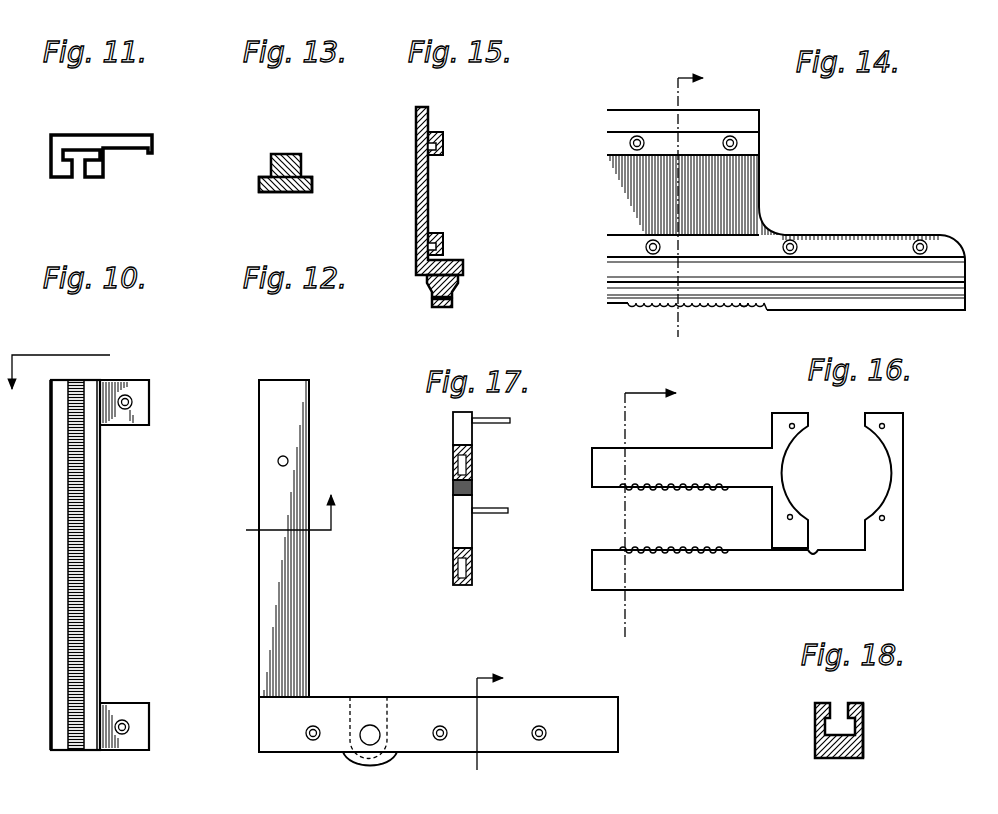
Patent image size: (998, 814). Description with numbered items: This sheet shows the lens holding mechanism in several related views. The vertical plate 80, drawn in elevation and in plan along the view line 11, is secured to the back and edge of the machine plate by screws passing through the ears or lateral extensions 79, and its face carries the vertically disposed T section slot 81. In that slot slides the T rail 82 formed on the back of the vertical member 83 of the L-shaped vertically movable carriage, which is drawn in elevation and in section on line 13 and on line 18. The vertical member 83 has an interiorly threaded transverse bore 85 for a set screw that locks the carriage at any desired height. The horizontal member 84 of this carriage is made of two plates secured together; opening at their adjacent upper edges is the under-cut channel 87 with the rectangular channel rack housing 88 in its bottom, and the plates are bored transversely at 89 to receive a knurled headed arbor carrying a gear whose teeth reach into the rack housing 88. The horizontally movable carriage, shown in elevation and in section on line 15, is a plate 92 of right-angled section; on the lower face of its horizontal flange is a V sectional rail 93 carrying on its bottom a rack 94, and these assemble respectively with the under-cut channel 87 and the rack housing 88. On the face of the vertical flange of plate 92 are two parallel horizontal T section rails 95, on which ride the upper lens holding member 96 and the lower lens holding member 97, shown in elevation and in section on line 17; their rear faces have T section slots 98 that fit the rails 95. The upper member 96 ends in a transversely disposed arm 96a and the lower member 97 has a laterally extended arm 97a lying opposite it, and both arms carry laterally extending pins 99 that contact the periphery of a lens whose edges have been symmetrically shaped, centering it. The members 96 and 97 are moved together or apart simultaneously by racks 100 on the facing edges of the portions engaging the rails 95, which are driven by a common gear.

In FIG. 11, the ears or lateral extensions 79 is at (148, 153).
In FIG. 10, the ears or lateral extensions 79 is at (145, 427).
In FIG. 11, the vertical plate 80 is at (91, 135).
In FIG. 10, the vertical plate 80 is at (102, 631).
In FIG. 11, the T section slot 81 is at (78, 163).
In FIG. 10, the T section slot 81 is at (78, 384).
In FIG. 13, the T rail 82 is at (288, 154).
In FIG. 13, the vertical member 83 is at (279, 192).
In FIG. 12, the vertical member 83 is at (266, 397).
In FIG. 12, the horizontal member 84 is at (431, 697).
In FIG. 18, the horizontal member 84 is at (862, 740).
In FIG. 12, the interiorly threaded transverse bore 85 is at (277, 463).
In FIG. 18, the under-cut channel 87 is at (840, 713).
In FIG. 18, the rectangular channel rack housing 88 is at (815, 732).
In FIG. 12, the transverse bore 89 is at (368, 724).
In FIG. 15, the plate 92 is at (416, 206).
In FIG. 15, the V sectional rail 93 is at (460, 288).
In FIG. 14, the V sectional rail 93 is at (926, 286).
In FIG. 15, the rack 94 is at (440, 308).
In FIG. 14, the rack 94 is at (754, 305).
In FIG. 15, the T section rails 95 is at (444, 143).
In FIG. 14, the T section rails 95 is at (613, 142).
In FIG. 17, the upper lens holding member 96 is at (460, 432).
In FIG. 16, the upper lens holding member 96 is at (693, 466).
In FIG. 17, the transversely disposed arm 96a is at (460, 520).
In FIG. 16, the transversely disposed arm 96a is at (772, 521).
In FIG. 17, the lower lens holding member 97 is at (452, 552).
In FIG. 16, the lower lens holding member 97 is at (705, 578).
In FIG. 16, the laterally extended arm 97a is at (904, 550).
In FIG. 14, the T section slots 98 is at (774, 197).
In FIG. 17, the T section slots 98 is at (457, 465).
In FIG. 17, the laterally extending pins 99 is at (492, 424).
In FIG. 16, the laterally extending pins 99 is at (791, 423).
In FIG. 16, the racks 100 is at (663, 550).
In FIG. 10, the plan view line of Fig. 11 is at (55, 391).
In FIG. 12, the section line 13— 13 is at (301, 494).
In FIG. 14, the section line 15— 15 is at (711, 201).
In FIG. 16, the section line 17— 17 is at (670, 508).
In FIG. 12, the section line 18— 18 is at (513, 719).